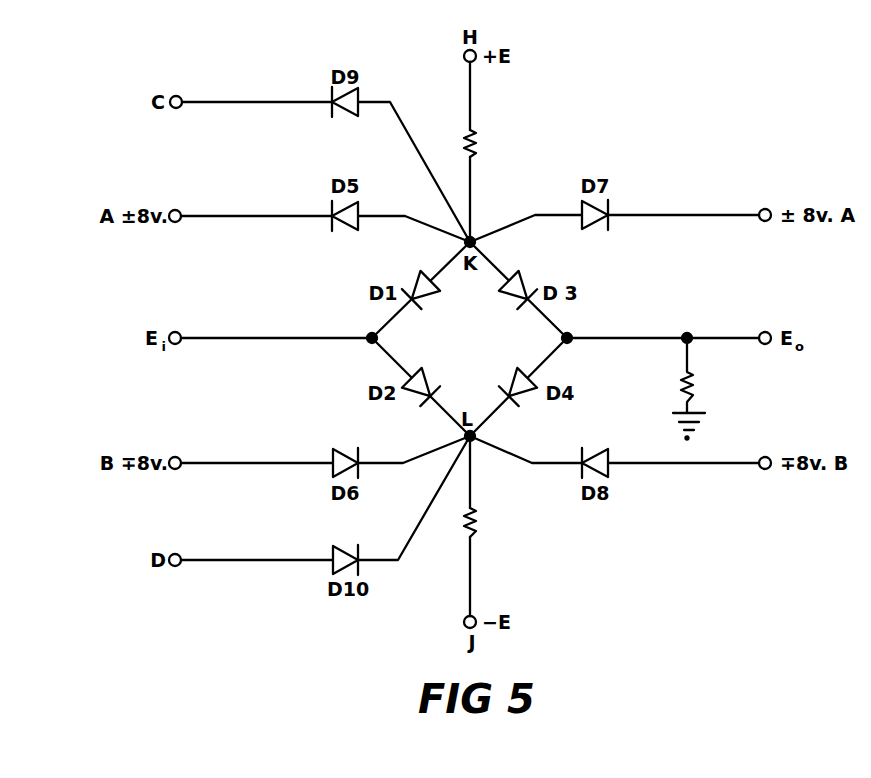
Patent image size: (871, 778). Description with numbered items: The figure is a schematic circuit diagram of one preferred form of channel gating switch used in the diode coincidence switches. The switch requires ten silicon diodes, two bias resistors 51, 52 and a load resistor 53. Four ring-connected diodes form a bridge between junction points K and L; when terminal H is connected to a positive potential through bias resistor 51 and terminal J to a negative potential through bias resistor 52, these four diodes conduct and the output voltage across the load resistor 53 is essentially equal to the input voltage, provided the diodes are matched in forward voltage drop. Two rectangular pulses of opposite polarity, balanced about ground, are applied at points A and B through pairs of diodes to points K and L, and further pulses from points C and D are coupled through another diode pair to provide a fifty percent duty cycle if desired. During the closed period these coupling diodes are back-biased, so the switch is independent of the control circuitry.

The bias resistor 51 is at (466, 138).
The bias resistor 52 is at (466, 521).
The load resistor 53 is at (683, 386).